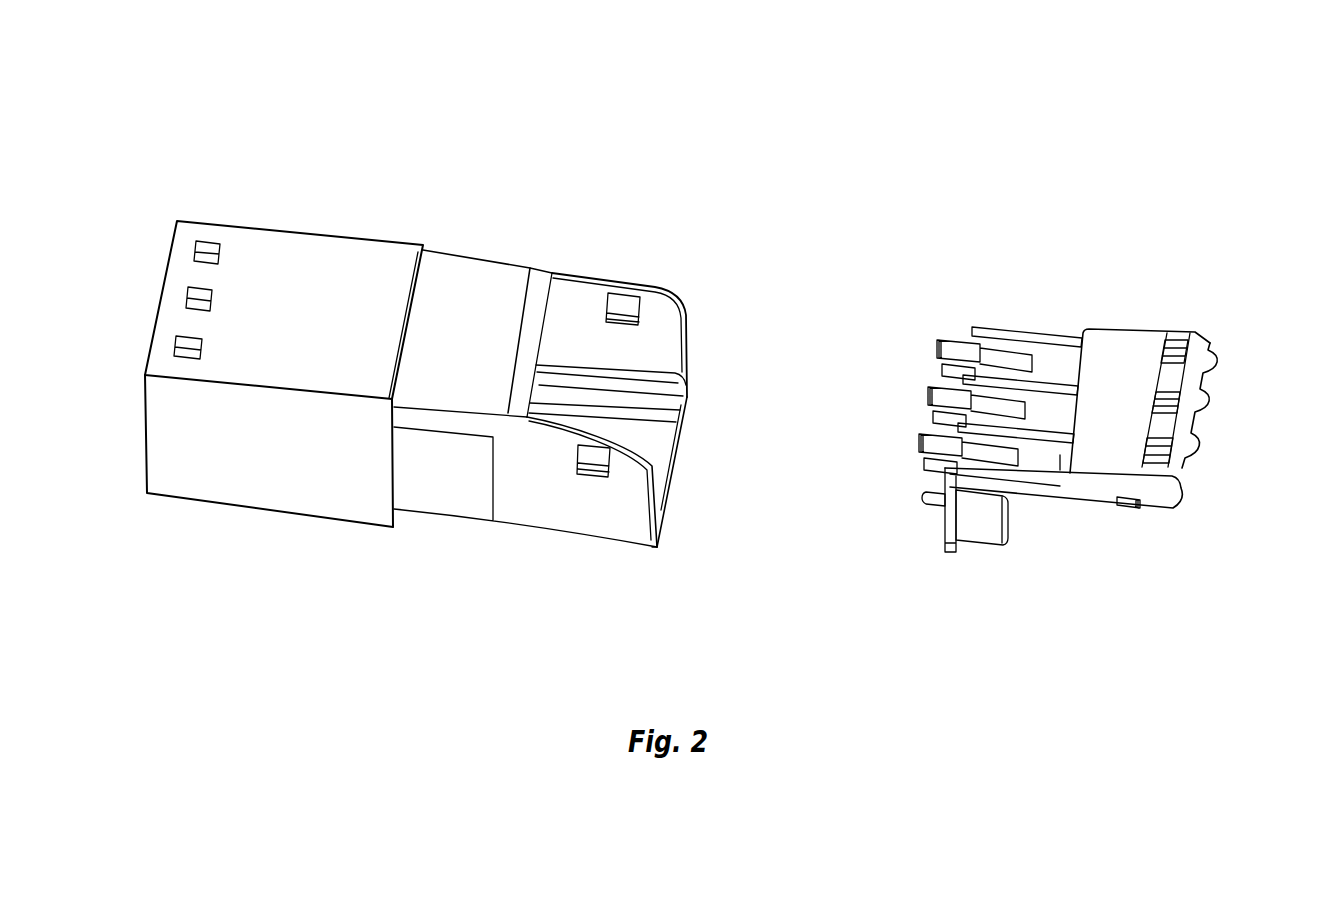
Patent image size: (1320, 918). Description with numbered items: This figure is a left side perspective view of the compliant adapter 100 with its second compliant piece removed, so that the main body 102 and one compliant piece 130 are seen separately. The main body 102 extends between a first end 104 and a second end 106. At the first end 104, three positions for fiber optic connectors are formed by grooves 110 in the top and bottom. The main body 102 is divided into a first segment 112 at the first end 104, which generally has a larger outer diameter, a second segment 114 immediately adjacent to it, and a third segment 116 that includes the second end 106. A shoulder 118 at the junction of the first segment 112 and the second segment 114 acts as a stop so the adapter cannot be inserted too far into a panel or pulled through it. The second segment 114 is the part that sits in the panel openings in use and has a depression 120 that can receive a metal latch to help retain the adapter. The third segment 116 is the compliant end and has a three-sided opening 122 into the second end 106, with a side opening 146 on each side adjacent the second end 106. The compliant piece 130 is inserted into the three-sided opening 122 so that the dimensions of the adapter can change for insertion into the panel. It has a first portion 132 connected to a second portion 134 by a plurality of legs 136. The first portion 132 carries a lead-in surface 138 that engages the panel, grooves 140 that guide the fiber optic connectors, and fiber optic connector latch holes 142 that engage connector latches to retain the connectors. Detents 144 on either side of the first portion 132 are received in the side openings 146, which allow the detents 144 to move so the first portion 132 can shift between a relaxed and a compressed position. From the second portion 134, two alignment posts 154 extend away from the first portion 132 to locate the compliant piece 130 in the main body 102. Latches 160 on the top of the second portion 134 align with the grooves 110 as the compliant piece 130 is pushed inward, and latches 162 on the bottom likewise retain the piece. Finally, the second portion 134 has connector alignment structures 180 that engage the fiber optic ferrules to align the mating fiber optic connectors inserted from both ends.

The compliant adapter 100 is at (977, 178).
The main body 102 is at (457, 373).
The first end 104 is at (284, 319).
The second end 106 is at (652, 552).
The grooves 110 is at (665, 410).
The first segment 112 is at (284, 374).
The second segment 114 is at (462, 333).
The third segment 116 is at (648, 389).
The shoulder 118 is at (430, 248).
The depression 120 is at (525, 487).
The three-sided opening 122 is at (657, 340).
The compliant piece 130 is at (1210, 299).
The first portion 132 is at (1120, 421).
The second portion 134 is at (940, 557).
The legs 136 is at (1045, 328).
The lead-in surface 138 is at (1200, 343).
The grooves 140 is at (1197, 468).
The fiber optic connector latch holes 142 is at (1163, 350).
The detents 144 is at (1132, 508).
The side openings 146 is at (622, 300).
The alignment posts 154 is at (933, 420).
The latches 160 is at (930, 397).
The latches 162 is at (923, 495).
The connector alignment structures 180 is at (1007, 543).